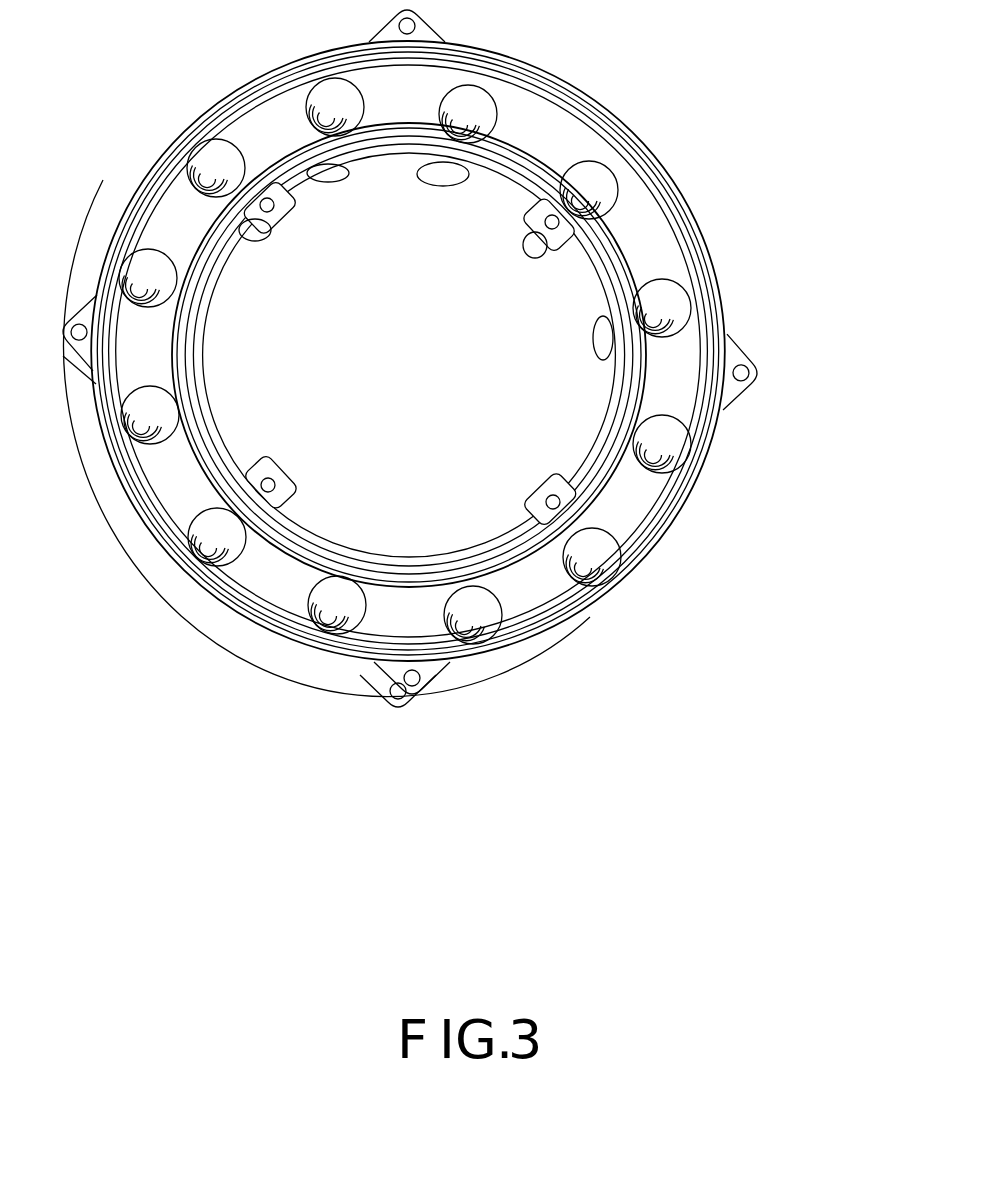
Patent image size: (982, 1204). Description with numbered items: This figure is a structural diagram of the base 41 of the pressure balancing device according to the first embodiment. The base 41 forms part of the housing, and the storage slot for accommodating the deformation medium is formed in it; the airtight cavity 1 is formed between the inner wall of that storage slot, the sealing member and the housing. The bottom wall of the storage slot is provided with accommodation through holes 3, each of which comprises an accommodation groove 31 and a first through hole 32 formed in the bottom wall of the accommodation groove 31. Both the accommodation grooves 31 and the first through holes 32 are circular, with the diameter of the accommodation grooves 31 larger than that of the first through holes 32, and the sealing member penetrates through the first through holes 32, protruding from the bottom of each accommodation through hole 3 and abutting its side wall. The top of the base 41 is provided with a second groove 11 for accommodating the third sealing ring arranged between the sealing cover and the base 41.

The airtight cavity 1 is at (533, 148).
The second groove 11 is at (257, 180).
The accommodation through hole 3 is at (695, 652).
The accommodation groove 31 is at (611, 543).
The first through hole 32 is at (583, 587).
The base 41 is at (327, 672).